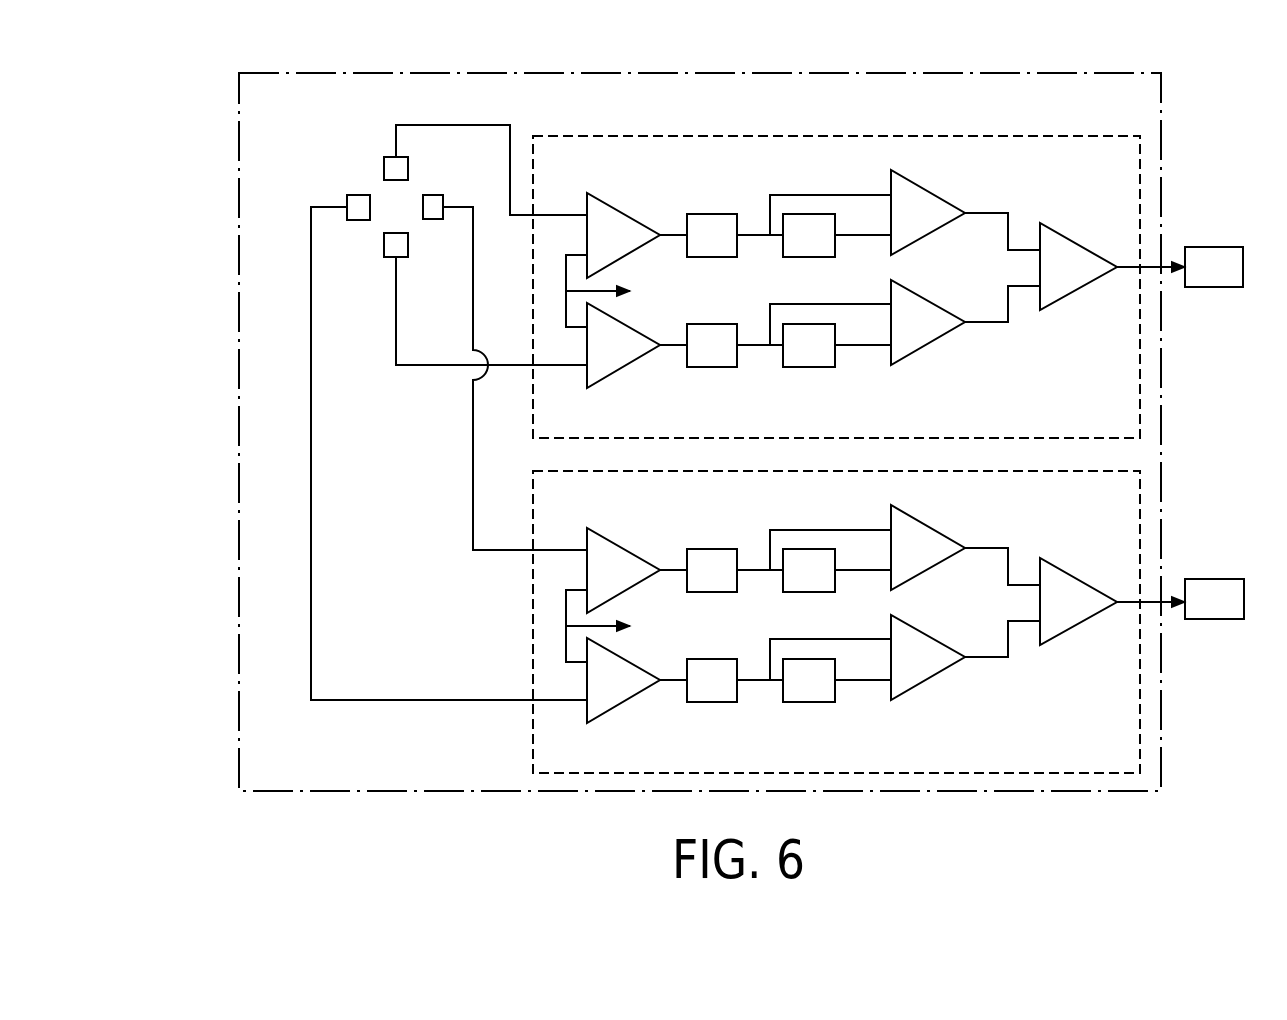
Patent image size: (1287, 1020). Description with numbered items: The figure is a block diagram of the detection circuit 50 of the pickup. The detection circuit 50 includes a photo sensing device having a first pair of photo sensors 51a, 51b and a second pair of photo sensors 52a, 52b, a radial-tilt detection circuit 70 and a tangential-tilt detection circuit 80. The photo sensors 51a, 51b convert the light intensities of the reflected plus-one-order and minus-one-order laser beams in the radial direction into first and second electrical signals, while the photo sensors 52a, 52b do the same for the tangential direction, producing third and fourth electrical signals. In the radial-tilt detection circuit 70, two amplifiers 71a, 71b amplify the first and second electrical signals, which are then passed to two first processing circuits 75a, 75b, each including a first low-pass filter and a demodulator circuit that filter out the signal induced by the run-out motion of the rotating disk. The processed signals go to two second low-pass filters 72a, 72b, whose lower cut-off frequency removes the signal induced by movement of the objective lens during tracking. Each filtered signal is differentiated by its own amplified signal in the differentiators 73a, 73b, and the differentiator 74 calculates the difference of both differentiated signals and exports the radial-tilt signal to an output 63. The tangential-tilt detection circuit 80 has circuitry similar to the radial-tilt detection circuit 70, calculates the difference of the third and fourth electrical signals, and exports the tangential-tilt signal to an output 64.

The detection circuit 50 is at (237, 385).
The photo sensor 51a is at (384, 168).
The photo sensor 51b is at (387, 253).
The photo sensor 52a is at (357, 203).
The photo sensor 52b is at (432, 202).
The first output terminal 63 is at (1207, 253).
The second output terminal 64 is at (1222, 585).
The radial-tilt detection circuit 70 is at (945, 133).
The amplifier 71a is at (617, 218).
The amplifier 71b is at (607, 356).
The second low-pass filter 72a is at (800, 258).
The second low-pass filter 72b is at (790, 368).
The differentiator 73a is at (923, 195).
The differentiator 73b is at (937, 334).
The differentiator 74 is at (1063, 285).
The first processing circuit 75a is at (703, 258).
The first processing circuit 75b is at (708, 368).
The tangential-tilt detection circuit 80 is at (528, 648).